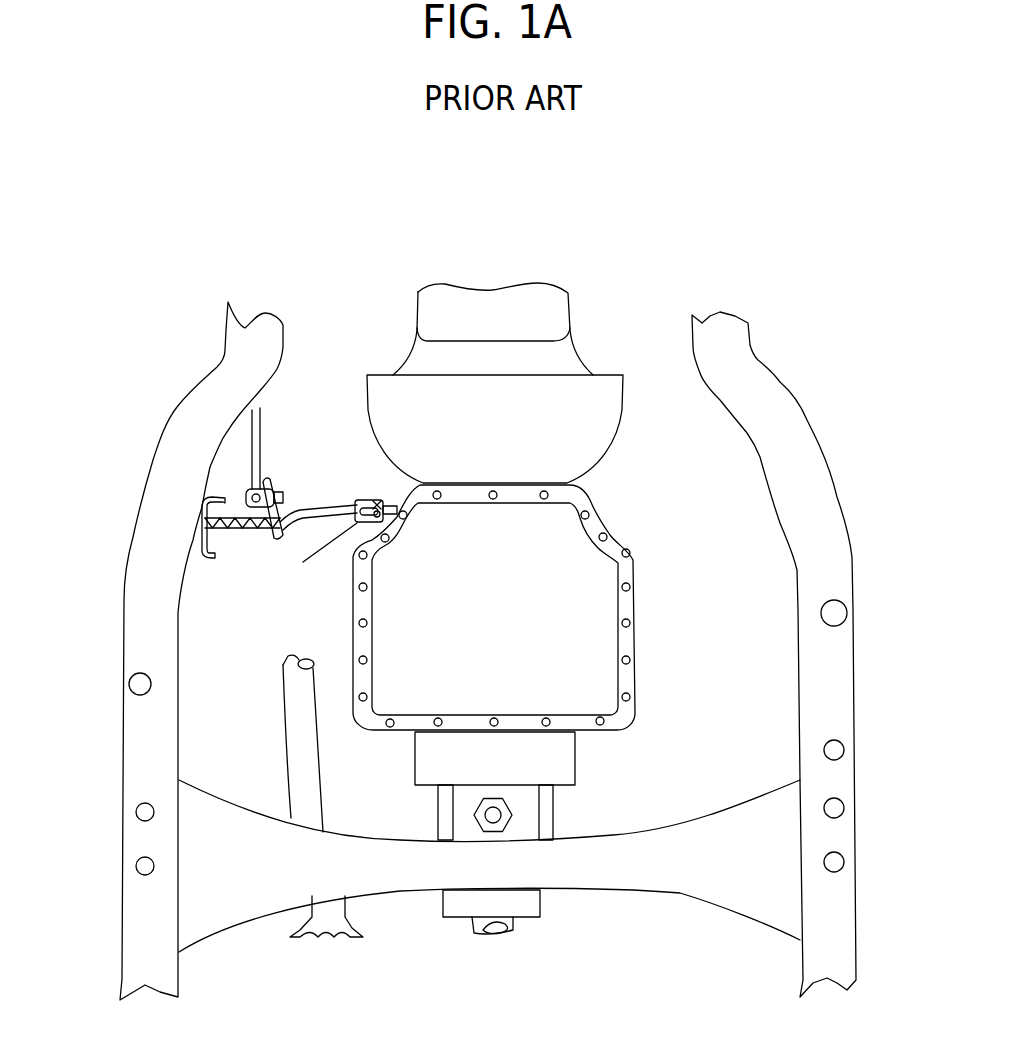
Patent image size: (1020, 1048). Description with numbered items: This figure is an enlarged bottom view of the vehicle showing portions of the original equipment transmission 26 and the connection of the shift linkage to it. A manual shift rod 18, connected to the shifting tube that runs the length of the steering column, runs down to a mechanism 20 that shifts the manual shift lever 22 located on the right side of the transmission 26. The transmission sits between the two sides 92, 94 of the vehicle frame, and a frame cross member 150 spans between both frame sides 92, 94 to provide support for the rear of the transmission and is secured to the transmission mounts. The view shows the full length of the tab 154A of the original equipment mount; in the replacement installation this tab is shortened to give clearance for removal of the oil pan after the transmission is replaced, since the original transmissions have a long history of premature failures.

The manual shift rod 18 is at (262, 458).
The mechanism 20 is at (288, 542).
The manual shift lever 22 is at (373, 500).
The original equipment transmission 26 is at (418, 358).
The frame side 92 is at (162, 483).
The frame side 94 is at (823, 487).
The frame cross member 150 is at (612, 877).
The tab 154A is at (527, 823).